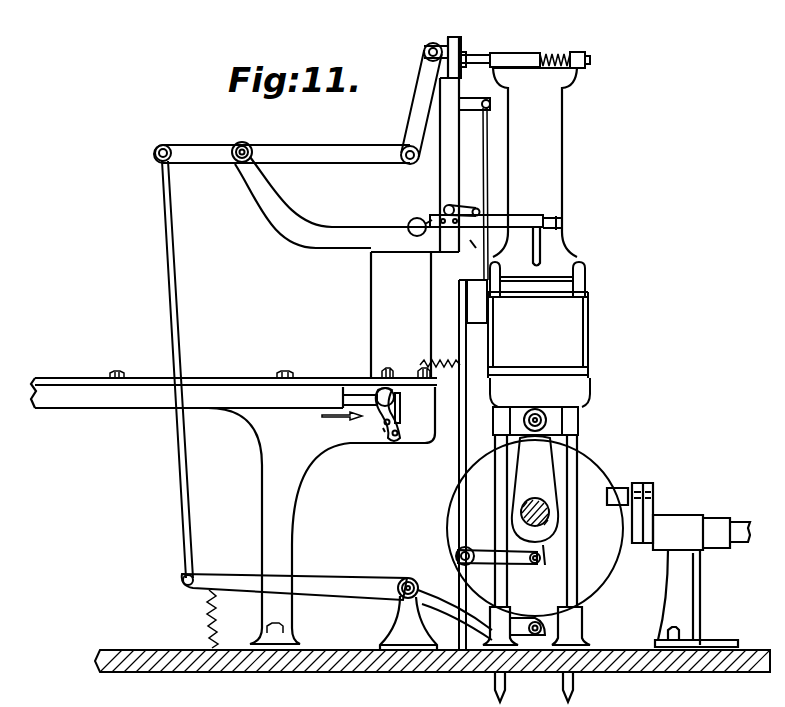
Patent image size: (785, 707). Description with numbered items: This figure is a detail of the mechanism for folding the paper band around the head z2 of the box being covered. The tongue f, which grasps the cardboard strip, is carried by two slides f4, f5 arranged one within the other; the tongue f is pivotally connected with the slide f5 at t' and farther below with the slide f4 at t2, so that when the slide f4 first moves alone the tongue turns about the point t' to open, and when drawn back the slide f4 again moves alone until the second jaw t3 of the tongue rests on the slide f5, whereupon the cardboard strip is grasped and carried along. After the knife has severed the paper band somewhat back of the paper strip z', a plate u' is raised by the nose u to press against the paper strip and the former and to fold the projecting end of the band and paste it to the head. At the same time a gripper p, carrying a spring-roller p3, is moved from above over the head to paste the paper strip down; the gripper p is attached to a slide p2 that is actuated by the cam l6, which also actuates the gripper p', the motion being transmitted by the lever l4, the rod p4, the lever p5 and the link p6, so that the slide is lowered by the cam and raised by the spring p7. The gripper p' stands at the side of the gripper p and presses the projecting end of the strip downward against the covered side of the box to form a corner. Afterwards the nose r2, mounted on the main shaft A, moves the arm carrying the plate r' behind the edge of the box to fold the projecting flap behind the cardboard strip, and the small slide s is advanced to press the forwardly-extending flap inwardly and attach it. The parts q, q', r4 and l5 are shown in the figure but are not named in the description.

The gripper p is at (535, 167).
The gripper p' is at (462, 255).
The slide p2 is at (455, 48).
The spring-roller p3 is at (546, 296).
The rod p4 is at (176, 300).
The lever p5 is at (302, 152).
The link p6 is at (418, 88).
The spring p7 is at (225, 632).
The lever q is at (496, 204).
The handle ball q' is at (406, 246).
The plate r' is at (466, 212).
The nose r2 is at (550, 564).
The vertical rod r4 is at (457, 455).
The head z2 is at (538, 335).
The paper strip z' is at (600, 305).
The nose u is at (535, 526).
The plate u' is at (540, 406).
The main shaft A is at (535, 503).
The lever l4 is at (452, 588).
The pivot l5 is at (534, 630).
The cam l6 is at (498, 574).
The tongue f is at (383, 430).
The slide f4 is at (348, 390).
The slide f5 is at (352, 410).
The pivot point t' is at (412, 408).
The pivot point t2 is at (399, 440).
The second jaw t3 is at (396, 400).
The small slide s is at (432, 678).